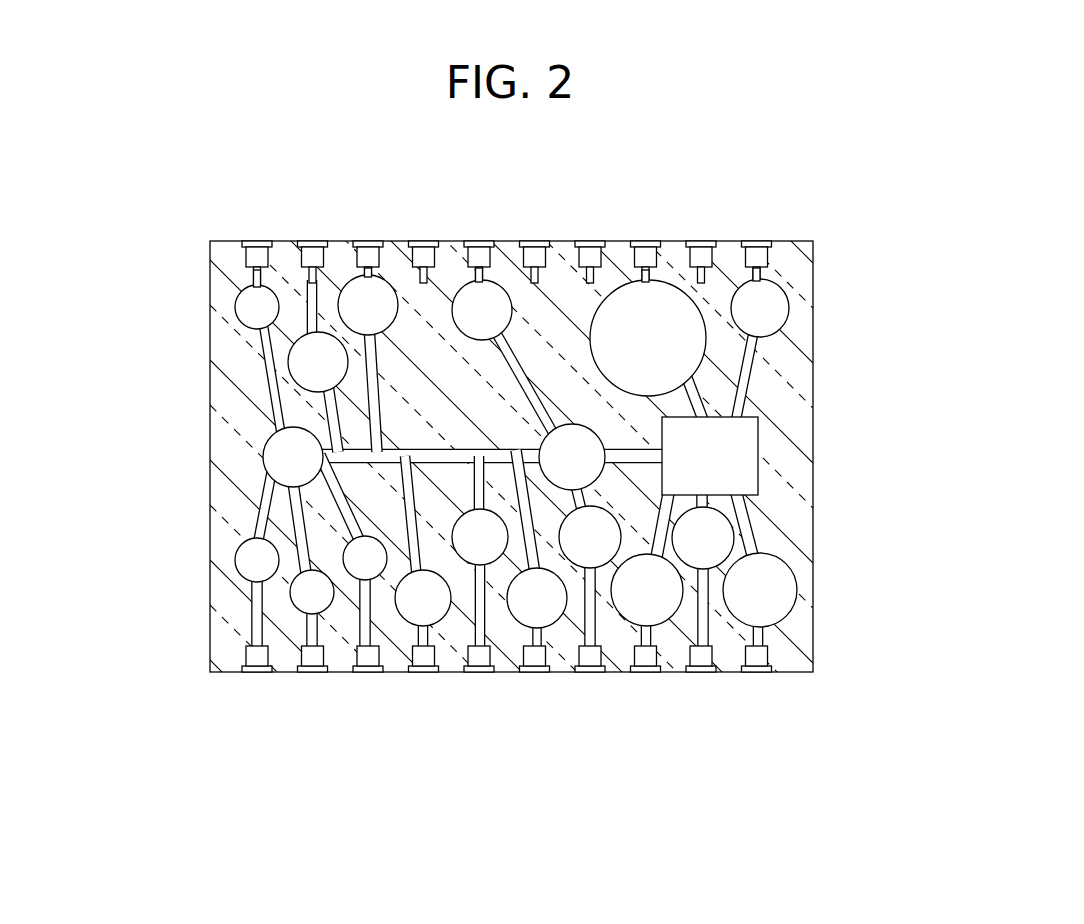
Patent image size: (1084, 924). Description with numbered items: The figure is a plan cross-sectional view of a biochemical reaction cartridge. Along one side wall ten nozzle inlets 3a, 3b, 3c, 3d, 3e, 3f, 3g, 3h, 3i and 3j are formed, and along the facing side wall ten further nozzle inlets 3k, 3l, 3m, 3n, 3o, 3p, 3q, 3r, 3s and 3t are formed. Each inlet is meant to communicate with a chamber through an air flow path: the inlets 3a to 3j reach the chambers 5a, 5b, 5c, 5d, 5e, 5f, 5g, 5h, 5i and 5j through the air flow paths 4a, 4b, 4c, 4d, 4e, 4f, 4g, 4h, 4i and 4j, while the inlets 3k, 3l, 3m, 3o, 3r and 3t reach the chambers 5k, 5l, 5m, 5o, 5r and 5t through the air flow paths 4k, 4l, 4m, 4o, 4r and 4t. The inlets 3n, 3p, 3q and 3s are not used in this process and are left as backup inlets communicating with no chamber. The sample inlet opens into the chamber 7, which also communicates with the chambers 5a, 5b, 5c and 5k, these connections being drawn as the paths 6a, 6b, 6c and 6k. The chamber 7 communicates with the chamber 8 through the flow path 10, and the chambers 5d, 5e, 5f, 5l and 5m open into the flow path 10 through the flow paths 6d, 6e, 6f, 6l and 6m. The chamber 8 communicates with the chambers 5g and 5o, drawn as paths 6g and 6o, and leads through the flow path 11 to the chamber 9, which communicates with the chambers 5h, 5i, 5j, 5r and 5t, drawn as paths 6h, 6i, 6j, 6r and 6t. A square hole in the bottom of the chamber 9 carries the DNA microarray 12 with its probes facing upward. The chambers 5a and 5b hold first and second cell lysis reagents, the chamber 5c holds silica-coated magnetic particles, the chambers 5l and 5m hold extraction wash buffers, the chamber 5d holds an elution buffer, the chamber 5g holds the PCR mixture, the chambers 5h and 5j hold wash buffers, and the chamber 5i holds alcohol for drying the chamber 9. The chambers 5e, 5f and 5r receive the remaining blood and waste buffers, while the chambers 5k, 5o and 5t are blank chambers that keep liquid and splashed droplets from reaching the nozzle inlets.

The nozzle inlet 3a is at (255, 672).
The nozzle inlet 3b is at (313, 672).
The nozzle inlet 3c is at (362, 672).
The nozzle inlet 3d is at (417, 672).
The nozzle inlet 3e is at (470, 672).
The nozzle inlet 3f is at (527, 672).
The nozzle inlet 3g is at (595, 672).
The nozzle inlet 3h is at (648, 672).
The nozzle inlet 3i is at (702, 672).
The nozzle inlet 3j is at (757, 672).
The nozzle inlet 3k is at (256, 241).
The nozzle inlet 3l is at (314, 241).
The nozzle inlet 3m is at (369, 241).
The backup nozzle inlet 3n is at (424, 241).
The nozzle inlet 3o is at (479, 241).
The backup nozzle inlet 3p is at (535, 241).
The backup nozzle inlet 3q is at (590, 241).
The nozzle inlet 3r is at (646, 241).
The backup nozzle inlet 3s is at (701, 241).
The nozzle inlet 3t is at (757, 241).
The air flow path 4a is at (255, 634).
The air flow path 4b is at (306, 640).
The air flow path 4c is at (362, 630).
The air flow path 4d is at (420, 640).
The air flow path 4e is at (476, 610).
The air flow path 4f is at (533, 640).
The air flow path 4g is at (588, 620).
The air flow path 4h is at (643, 638).
The air flow path 4i is at (700, 610).
The air flow path 4j is at (756, 640).
The air flow path 4k is at (228, 250).
The air flow path 4l is at (290, 262).
The air flow path 4m is at (393, 252).
The air flow path 4o is at (500, 250).
The air flow path 4r is at (674, 335).
The air flow path 4t is at (770, 272).
The chamber 5a is at (236, 560).
The chamber 5b is at (291, 592).
The chamber 5c is at (367, 548).
The chamber 5d is at (405, 625).
The chamber 5e is at (457, 528).
The chamber 5f is at (547, 642).
The chamber 5g is at (621, 545).
The chamber 5h is at (772, 620).
The chamber 5i is at (668, 595).
The chamber 5j is at (783, 595).
The blank chamber 5k is at (247, 298).
The chamber 5l is at (288, 358).
The chamber 5m is at (350, 275).
The blank chamber 5o is at (470, 275).
The chamber 5r is at (698, 333).
The blank chamber 5t is at (787, 288).
The wiring 6a is at (263, 488).
The wiring 6b is at (296, 540).
The wiring 6c is at (325, 522).
The flow path 6d is at (402, 488).
The flow path 6e is at (473, 492).
The flow path 6f is at (500, 449).
The wiring 6g is at (590, 497).
The wiring 6h is at (665, 545).
The wiring 6i is at (710, 515).
The wiring 6j is at (745, 500).
The wiring 6k is at (272, 368).
The flow path 6l is at (312, 400).
The flow path 6m is at (383, 417).
The wiring 6o is at (516, 275).
The wiring 6r is at (697, 397).
The wiring 6t is at (753, 346).
The chamber 7 is at (263, 452).
The chamber 8 is at (574, 440).
The chamber 9 is at (748, 451).
The flow path 10 is at (255, 420).
The flow path 11 is at (610, 448).
The DNA microarray 12 is at (735, 478).